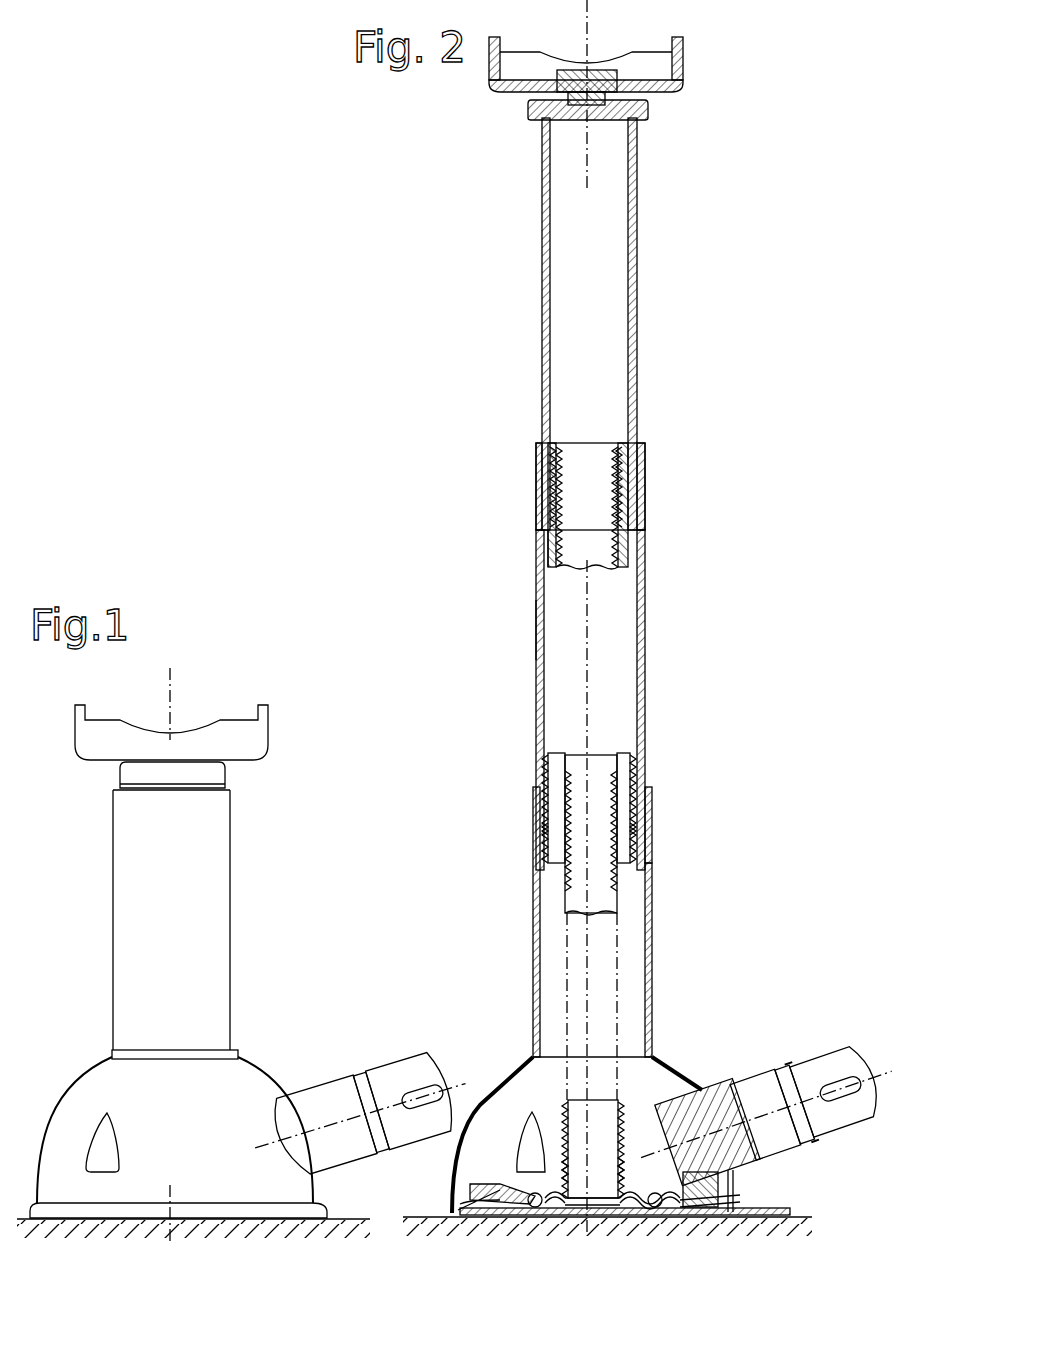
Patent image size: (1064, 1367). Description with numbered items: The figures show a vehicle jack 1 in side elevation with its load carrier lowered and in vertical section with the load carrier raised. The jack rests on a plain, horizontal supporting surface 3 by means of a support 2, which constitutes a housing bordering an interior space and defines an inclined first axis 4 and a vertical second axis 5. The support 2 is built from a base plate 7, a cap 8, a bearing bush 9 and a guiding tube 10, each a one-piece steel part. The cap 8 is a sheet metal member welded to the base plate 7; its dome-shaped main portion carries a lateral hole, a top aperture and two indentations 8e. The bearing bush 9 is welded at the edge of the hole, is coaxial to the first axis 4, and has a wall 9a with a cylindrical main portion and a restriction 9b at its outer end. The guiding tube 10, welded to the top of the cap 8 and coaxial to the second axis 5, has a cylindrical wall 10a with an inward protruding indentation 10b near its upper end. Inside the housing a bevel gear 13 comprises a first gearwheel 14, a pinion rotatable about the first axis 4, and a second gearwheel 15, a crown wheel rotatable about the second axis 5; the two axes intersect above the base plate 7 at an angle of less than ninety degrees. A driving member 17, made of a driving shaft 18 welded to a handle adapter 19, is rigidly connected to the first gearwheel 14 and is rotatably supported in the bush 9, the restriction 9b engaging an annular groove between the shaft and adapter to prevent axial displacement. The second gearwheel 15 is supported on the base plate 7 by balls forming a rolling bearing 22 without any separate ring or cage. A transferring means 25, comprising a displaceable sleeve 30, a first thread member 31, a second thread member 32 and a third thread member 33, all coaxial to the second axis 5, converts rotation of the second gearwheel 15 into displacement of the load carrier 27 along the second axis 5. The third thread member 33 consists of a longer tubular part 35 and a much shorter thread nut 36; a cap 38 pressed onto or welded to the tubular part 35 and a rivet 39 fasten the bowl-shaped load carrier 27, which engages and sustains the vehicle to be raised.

In FIG. 1, the vehicle jack 1 is at (95, 833).
In FIG. 2, the vehicle jack 1 is at (512, 141).
In FIG. 1, the support 2 is at (100, 1060).
In FIG. 2, the support 2 is at (517, 1063).
In FIG. 1, the supporting surface 3 is at (340, 1218).
In FIG. 2, the supporting surface 3 is at (782, 1217).
In FIG. 1, the first axis 4 is at (330, 1125).
In FIG. 2, the first axis 4 is at (830, 1135).
In FIG. 1, the second axis 5 is at (172, 682).
In FIG. 2, the second axis 5 is at (589, 38).
In FIG. 2, the base plate 7 is at (612, 1215).
In FIG. 1, the cap 8 is at (60, 1098).
In FIG. 2, the cap 8 is at (488, 1084).
In FIG. 1, the indentations 8e is at (85, 1147).
In FIG. 2, the indentations 8e is at (522, 1170).
In FIG. 1, the bearing bush 9 is at (306, 1088).
In FIG. 2, the bearing bush 9 is at (731, 1082).
In FIG. 2, the wall 9a is at (738, 1092).
In FIG. 2, the restriction 9b is at (790, 1088).
In FIG. 1, the guiding tube 10 is at (113, 905).
In FIG. 2, the guiding tube 10 is at (533, 902).
In FIG. 2, the cylindrical wall 10a is at (652, 886).
In FIG. 2, the indentation 10b is at (652, 826).
In FIG. 2, the bevel gear 13 is at (720, 1194).
In FIG. 2, the first gearwheel 14 is at (665, 1080).
In FIG. 2, the second gearwheel 15 is at (470, 1186).
In FIG. 1, the driving member 17 is at (434, 1054).
In FIG. 2, the driving member 17 is at (832, 1054).
In FIG. 2, the driving shaft 18 is at (772, 1052).
In FIG. 1, the handle adapter 19 is at (406, 1072).
In FIG. 2, the handle adapter 19 is at (856, 1115).
In FIG. 2, the rolling bearing 22 is at (532, 1182).
In FIG. 2, the transferring means 25 is at (534, 629).
In FIG. 1, the load carrier 27 is at (268, 748).
In FIG. 2, the load carrier 27 is at (680, 84).
In FIG. 2, the displaceable sleeve 30 is at (536, 685).
In FIG. 2, the first thread member 31 is at (565, 885).
In FIG. 2, the second thread member 32 is at (548, 540).
In FIG. 2, the third thread member 33 is at (640, 443).
In FIG. 2, the tubular part 35 is at (640, 343).
In FIG. 2, the thread nut 36 is at (640, 540).
In FIG. 1, the cap 38 is at (225, 772).
In FIG. 2, the cap 38 is at (648, 119).
In FIG. 2, the rivet 39 is at (612, 62).